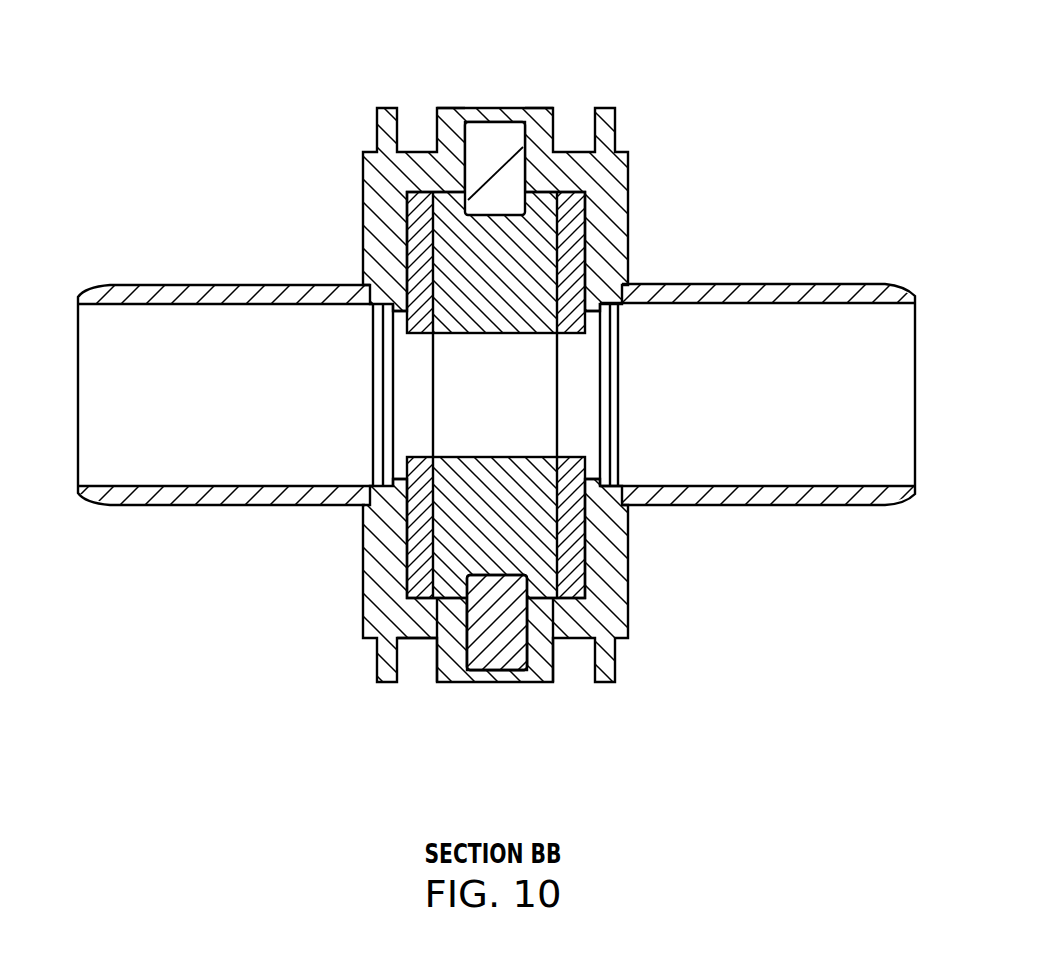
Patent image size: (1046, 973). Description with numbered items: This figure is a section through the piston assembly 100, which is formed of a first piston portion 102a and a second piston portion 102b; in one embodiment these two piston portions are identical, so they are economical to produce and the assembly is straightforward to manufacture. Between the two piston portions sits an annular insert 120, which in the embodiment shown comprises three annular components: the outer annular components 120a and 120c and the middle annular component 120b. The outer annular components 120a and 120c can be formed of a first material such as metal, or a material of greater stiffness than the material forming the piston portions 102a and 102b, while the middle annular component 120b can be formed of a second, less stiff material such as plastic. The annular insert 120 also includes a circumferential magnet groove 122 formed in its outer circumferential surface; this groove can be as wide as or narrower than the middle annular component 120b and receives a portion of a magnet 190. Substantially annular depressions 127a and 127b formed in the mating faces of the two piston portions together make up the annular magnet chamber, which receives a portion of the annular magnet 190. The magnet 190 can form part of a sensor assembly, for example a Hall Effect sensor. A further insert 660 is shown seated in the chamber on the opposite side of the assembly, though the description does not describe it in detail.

The piston assembly 100 is at (226, 629).
The first piston portion 102a is at (275, 218).
The second piston portion 102b is at (746, 205).
The annular insert 120 is at (594, 602).
The outer annular component 120a is at (420, 598).
The middle annular component 120b is at (450, 590).
The outer annular component 120c is at (572, 600).
The circumferential magnet groove 122 is at (507, 575).
The annular magnet chamber depression 127a is at (465, 145).
The annular magnet chamber depression 127b is at (528, 143).
The magnet 190 is at (487, 643).
The upper insert block 660 is at (502, 143).